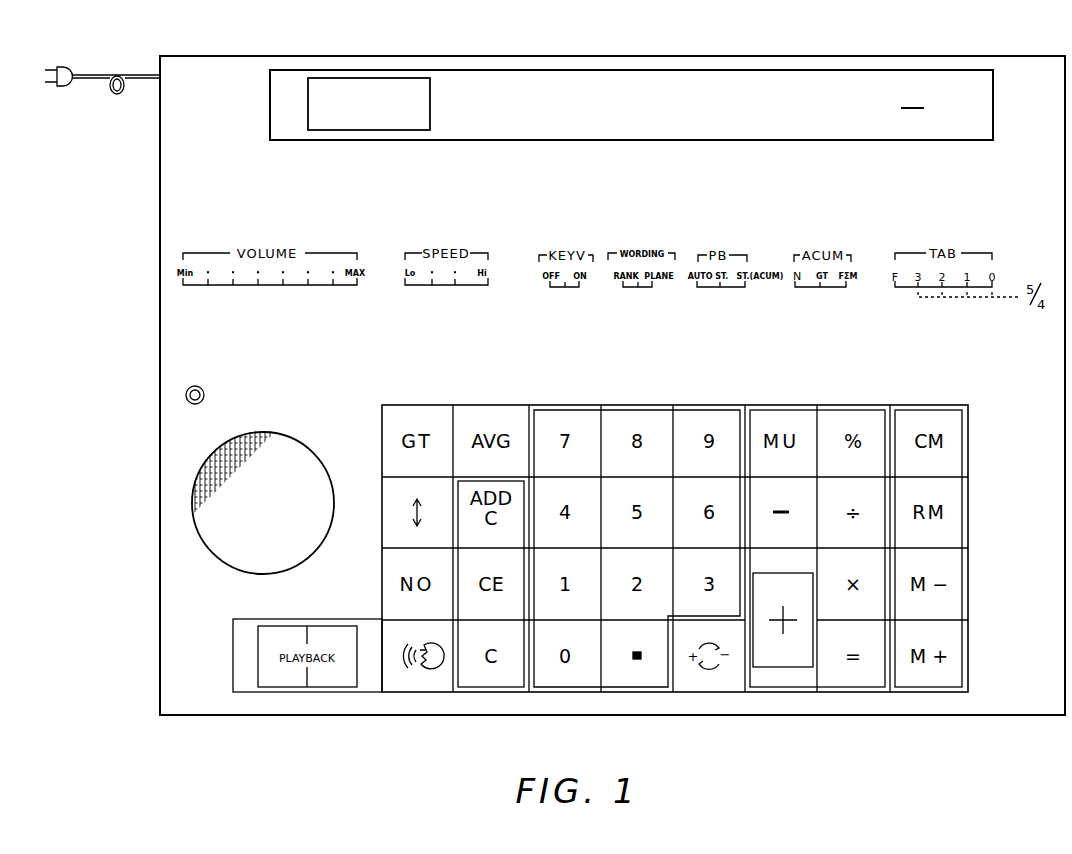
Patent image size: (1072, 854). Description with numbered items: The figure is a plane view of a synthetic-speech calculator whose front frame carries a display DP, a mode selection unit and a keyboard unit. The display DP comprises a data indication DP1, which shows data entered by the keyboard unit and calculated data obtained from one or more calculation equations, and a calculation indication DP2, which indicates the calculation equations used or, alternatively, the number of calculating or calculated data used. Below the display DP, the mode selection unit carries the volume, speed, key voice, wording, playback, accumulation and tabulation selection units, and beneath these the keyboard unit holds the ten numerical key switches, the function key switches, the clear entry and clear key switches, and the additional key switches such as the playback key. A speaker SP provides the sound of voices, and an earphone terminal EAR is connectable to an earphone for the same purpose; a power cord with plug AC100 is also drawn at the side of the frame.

The display DP is at (593, 70).
The data indication DP1 is at (378, 78).
The calculation indication DP2 is at (866, 86).
The AC power plug AC100 is at (102, 86).
The earphone jack EAR is at (199, 385).
The speaker SP is at (262, 499).